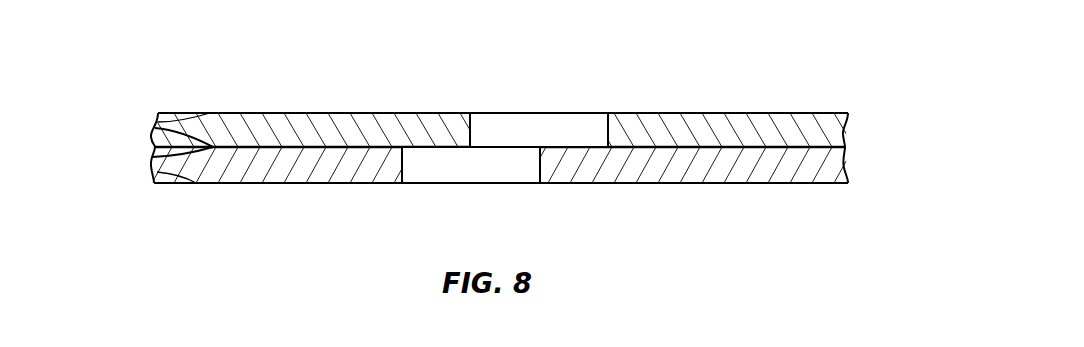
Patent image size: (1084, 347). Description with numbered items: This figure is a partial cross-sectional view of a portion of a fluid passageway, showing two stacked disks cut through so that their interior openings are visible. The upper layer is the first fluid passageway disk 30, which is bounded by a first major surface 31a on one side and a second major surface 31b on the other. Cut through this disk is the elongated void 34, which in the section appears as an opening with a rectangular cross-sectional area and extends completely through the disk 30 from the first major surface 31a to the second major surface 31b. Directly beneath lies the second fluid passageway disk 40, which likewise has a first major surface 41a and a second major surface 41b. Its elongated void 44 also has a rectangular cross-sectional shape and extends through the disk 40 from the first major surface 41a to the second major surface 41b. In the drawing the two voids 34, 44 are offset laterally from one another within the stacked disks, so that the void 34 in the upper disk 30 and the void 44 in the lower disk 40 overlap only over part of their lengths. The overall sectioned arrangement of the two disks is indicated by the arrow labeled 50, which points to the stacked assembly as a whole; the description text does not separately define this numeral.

The first fluid passageway disk 30 is at (812, 129).
The first major surface 31a is at (158, 122).
The second major surface 31b is at (155, 128).
The elongated void 34 is at (565, 133).
The second fluid passageway disk 40 is at (812, 167).
The first major surface 41a is at (152, 157).
The second major surface 41b is at (157, 172).
The elongated void 44 is at (470, 163).
The laminated structure 50 is at (519, 98).